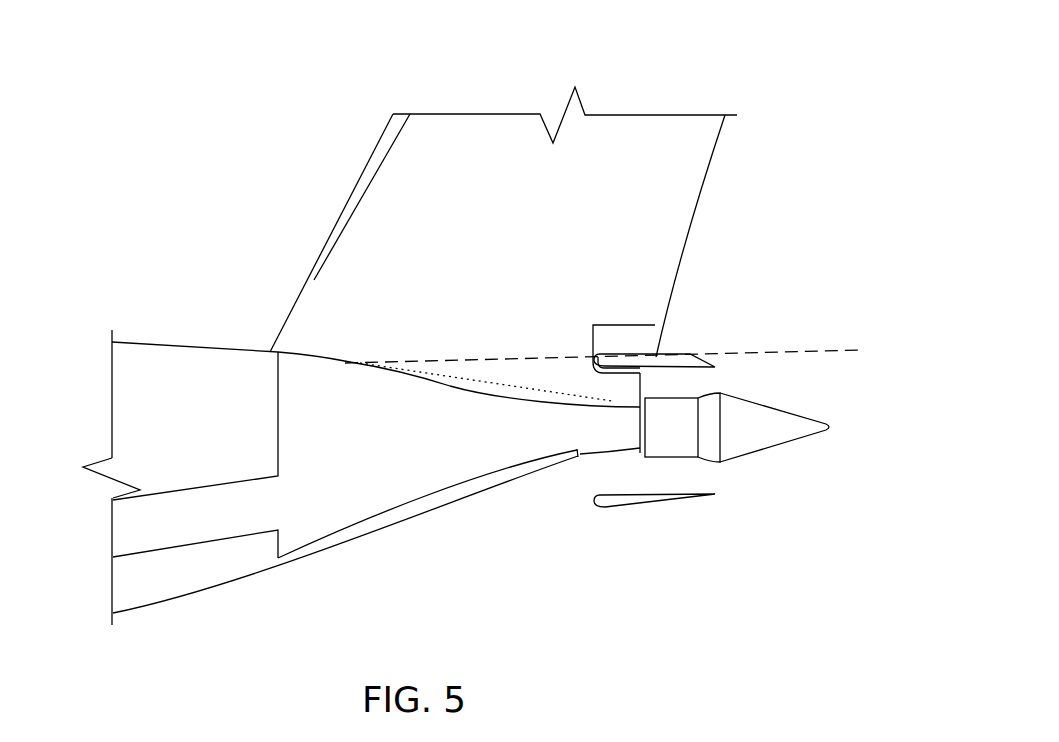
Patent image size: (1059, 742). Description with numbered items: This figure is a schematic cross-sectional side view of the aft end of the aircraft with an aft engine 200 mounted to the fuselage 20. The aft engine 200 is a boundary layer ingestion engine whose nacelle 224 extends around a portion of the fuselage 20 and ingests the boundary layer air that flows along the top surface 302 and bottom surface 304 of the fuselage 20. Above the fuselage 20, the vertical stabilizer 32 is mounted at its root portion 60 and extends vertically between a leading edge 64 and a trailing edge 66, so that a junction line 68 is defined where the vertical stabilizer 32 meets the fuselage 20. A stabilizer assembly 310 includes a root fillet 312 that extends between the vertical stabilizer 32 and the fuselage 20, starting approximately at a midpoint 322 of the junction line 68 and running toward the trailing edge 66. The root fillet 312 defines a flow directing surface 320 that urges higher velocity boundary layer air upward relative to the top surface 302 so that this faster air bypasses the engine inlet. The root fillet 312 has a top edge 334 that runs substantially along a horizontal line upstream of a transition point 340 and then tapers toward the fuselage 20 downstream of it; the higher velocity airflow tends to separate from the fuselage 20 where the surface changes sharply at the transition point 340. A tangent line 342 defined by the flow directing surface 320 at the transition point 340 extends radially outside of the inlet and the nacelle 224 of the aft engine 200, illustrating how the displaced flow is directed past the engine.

The fuselage 20 is at (178, 602).
The vertical stabilizer 32 is at (442, 142).
The root portion 60 is at (333, 376).
The leading edge 64 is at (340, 188).
The trailing edge 66 is at (724, 180).
The junction line 68 is at (300, 359).
The aft engine 200 is at (732, 509).
The nacelle 224 is at (684, 363).
The top surface 302 is at (135, 330).
The bottom surface 304 is at (132, 624).
The stabilizer assembly 310 is at (566, 201).
The root fillet 312 is at (527, 387).
The flow directing surface 320 is at (505, 372).
The midpoint 322 is at (360, 383).
The top edge 334 is at (564, 369).
The transition point 340 is at (537, 367).
The tangent line 342 is at (800, 350).